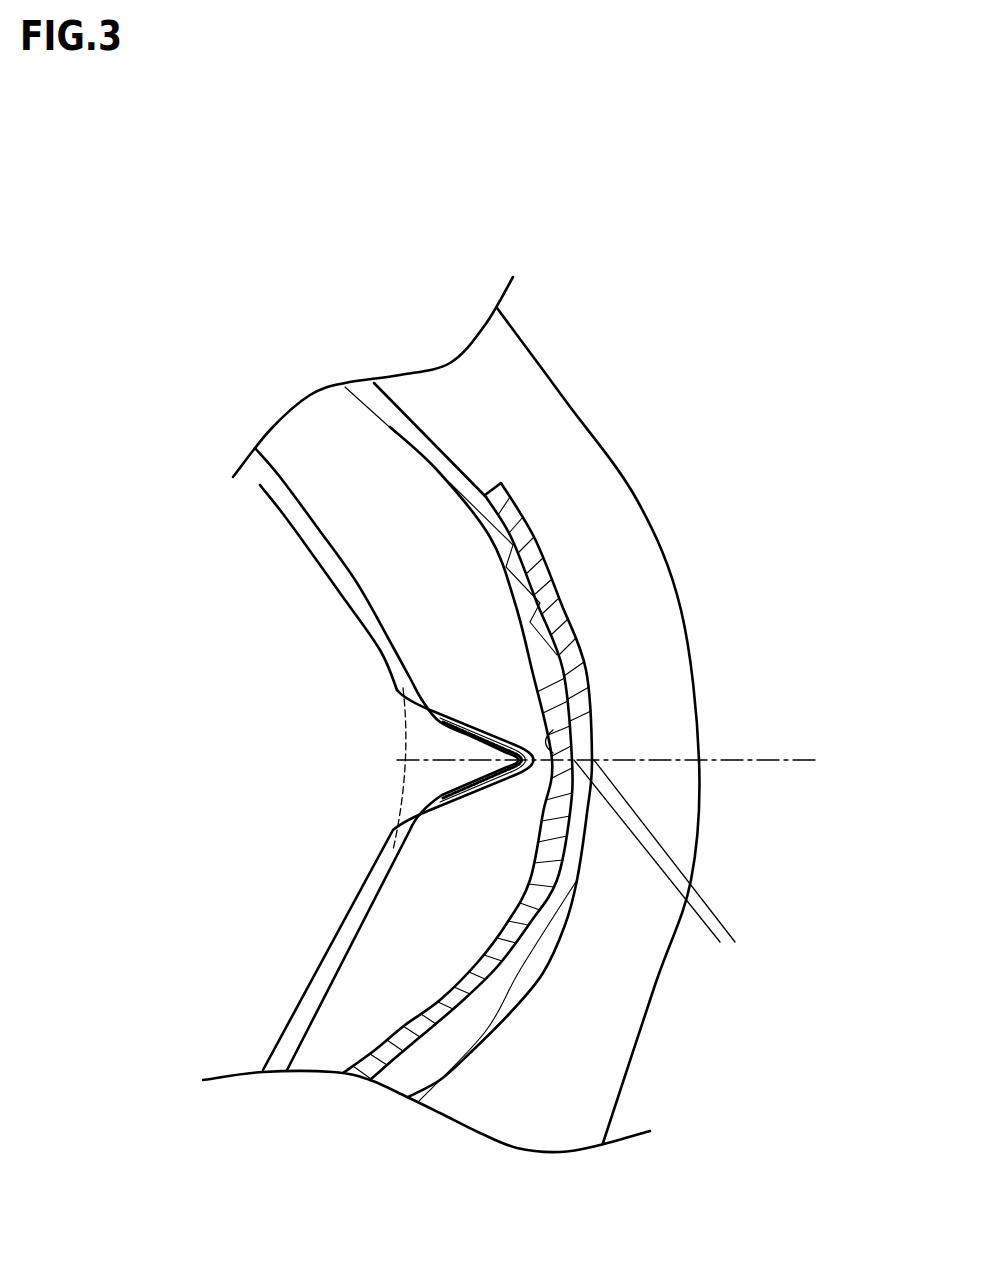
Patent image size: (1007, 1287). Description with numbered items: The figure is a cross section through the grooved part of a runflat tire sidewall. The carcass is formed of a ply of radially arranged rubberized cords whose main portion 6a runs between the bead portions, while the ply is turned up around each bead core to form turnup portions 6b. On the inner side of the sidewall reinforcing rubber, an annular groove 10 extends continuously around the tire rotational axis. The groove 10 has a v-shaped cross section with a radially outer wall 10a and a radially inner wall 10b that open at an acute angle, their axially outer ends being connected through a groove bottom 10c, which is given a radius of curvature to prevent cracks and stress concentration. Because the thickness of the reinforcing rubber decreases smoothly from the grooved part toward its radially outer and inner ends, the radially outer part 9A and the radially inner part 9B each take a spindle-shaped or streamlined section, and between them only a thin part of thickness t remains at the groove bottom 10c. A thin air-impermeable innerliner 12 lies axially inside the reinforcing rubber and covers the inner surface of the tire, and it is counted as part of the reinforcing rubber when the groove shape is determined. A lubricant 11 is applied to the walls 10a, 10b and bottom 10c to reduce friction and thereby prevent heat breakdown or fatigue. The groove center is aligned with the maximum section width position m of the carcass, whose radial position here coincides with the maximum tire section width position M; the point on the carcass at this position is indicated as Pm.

The main portion 6a is at (400, 417).
The turnup portions 6b is at (503, 503).
The radially outer part 9A is at (343, 508).
The radially inner part 9B is at (377, 912).
The annular groove 10 is at (410, 741).
The radially outer wall 10a is at (408, 712).
The radially inner wall 10b is at (425, 797).
The groove bottom 10c is at (498, 733).
The lubricant 11 is at (408, 771).
The innerliner 12 is at (260, 485).
The point of maximum width on carcass Pm is at (547, 738).
The maximum tire section width position M is at (699, 759).
The maximum section width position of the carcass m is at (592, 760).
The thickness t is at (684, 942).